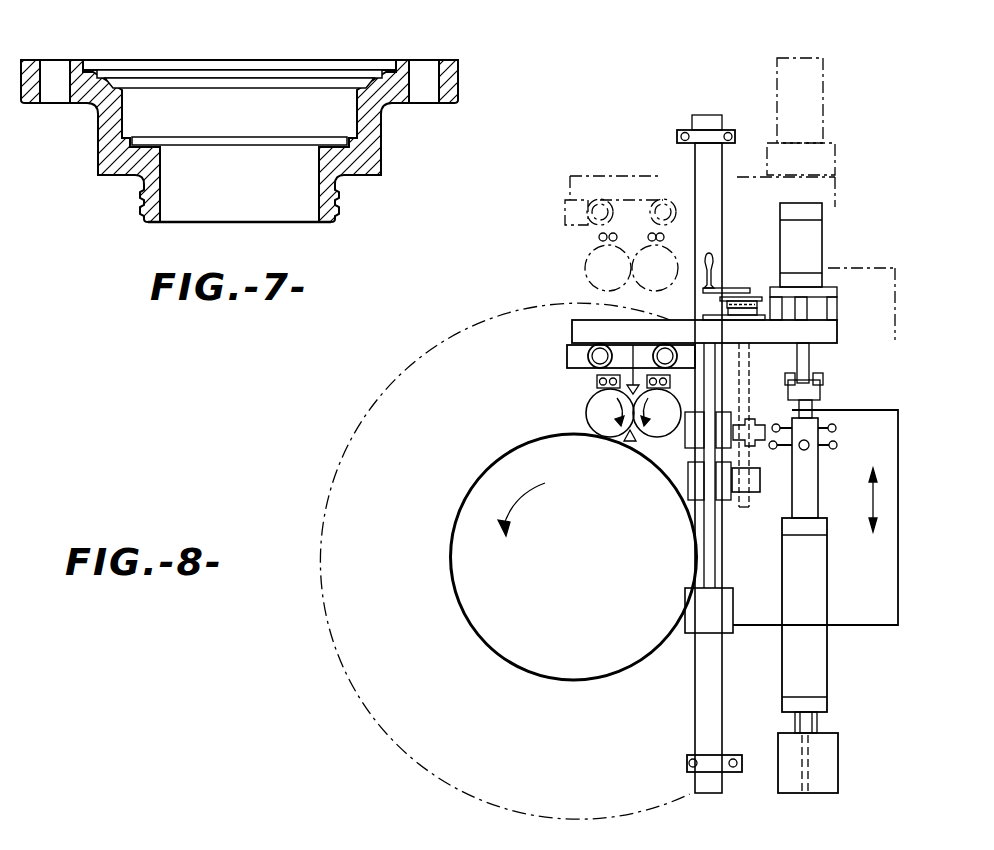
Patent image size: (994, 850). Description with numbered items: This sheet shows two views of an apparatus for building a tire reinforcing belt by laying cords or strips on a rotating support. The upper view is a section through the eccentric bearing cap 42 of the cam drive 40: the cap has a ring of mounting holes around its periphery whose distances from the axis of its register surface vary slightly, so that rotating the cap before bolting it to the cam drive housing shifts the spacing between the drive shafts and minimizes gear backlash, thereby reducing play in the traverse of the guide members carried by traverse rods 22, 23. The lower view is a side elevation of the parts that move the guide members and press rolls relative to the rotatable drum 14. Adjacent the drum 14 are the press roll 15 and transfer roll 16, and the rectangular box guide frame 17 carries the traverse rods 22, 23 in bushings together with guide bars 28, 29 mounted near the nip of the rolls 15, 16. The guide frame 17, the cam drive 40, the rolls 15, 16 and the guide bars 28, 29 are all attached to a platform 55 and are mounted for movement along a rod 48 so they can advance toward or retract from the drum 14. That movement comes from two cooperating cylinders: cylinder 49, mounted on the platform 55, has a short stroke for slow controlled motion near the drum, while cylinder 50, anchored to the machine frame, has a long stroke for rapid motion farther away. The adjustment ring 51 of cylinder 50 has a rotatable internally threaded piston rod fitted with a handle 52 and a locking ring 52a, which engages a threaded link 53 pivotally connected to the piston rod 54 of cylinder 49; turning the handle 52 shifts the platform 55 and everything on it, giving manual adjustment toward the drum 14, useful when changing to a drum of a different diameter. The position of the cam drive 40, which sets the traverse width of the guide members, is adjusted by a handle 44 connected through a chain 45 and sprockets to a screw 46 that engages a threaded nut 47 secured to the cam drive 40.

In FIG. 8, the rotatable drum 14 is at (477, 612).
In FIG. 8, the press roll 15 is at (597, 411).
In FIG. 8, the transfer roll 16 is at (658, 420).
In FIG. 8, the rectangular box guide frame 17 is at (570, 360).
In FIG. 8, the traverse rod 22 is at (593, 346).
In FIG. 8, the traverse rod 23 is at (670, 345).
In FIG. 8, the guide bar 28 is at (627, 356).
In FIG. 8, the guide bar 29 is at (628, 440).
In FIG. 8, the cam drive 40 is at (862, 618).
In FIG. 7, the eccentric bearing cap 42 is at (97, 52).
In FIG. 8, the handle 44 is at (713, 256).
In FIG. 8, the chain 45 is at (762, 298).
In FIG. 8, the screw 46 is at (744, 372).
In FIG. 8, the threaded nut 47 is at (760, 420).
In FIG. 8, the rod 48 is at (702, 122).
In FIG. 8, the cylinder 49 is at (818, 236).
In FIG. 8, the cylinder 50 is at (818, 680).
In FIG. 8, the adjustment ring 51 is at (808, 489).
In FIG. 8, the handle 52 is at (833, 446).
In FIG. 8, the locking ring 52a is at (840, 424).
In FIG. 8, the threaded link 53 is at (820, 393).
In FIG. 8, the piston rod 54 is at (809, 358).
In FIG. 8, the platform 55 is at (830, 336).